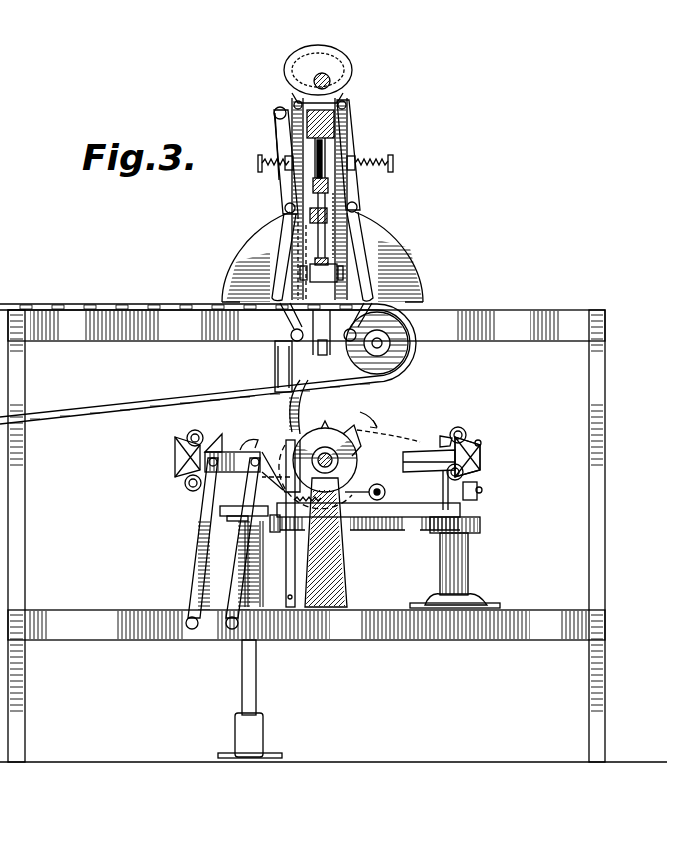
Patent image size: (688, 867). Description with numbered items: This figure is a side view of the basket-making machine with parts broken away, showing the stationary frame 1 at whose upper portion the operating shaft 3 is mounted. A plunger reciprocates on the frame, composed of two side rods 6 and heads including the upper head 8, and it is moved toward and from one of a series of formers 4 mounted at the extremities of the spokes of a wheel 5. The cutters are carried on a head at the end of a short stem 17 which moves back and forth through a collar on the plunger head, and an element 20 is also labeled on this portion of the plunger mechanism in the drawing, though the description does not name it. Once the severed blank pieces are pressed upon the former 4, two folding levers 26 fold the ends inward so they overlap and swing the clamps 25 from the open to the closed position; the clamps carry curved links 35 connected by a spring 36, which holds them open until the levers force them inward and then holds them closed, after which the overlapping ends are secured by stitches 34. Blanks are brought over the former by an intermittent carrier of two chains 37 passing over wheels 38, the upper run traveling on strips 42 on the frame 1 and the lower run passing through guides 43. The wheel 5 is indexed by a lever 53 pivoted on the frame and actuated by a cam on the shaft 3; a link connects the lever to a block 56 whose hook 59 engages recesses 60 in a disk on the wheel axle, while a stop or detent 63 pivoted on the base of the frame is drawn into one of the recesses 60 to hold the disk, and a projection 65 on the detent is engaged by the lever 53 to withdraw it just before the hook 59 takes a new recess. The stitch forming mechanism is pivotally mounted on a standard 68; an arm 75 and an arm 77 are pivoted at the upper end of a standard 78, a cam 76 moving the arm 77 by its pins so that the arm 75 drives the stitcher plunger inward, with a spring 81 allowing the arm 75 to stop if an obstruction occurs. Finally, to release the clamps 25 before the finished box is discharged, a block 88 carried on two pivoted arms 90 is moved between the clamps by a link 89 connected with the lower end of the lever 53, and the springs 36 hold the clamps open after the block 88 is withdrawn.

The frame 1 is at (516, 298).
The operating shaft 3 is at (332, 72).
The former 4 is at (174, 461).
The wheel 5 is at (425, 452).
The side rods 6 is at (332, 160).
The upper head of the plunger 8 is at (336, 128).
The stem 17 is at (318, 240).
The lever arm 20 is at (336, 232).
The clamps 25 is at (286, 336).
The folding levers 26 is at (408, 243).
The stitches 34 is at (482, 462).
The curved links 35 is at (468, 430).
The spring 36 is at (449, 438).
The chains 37 is at (108, 308).
The wheels 38 is at (414, 352).
The strips 42 is at (229, 318).
The guides 43 is at (156, 402).
The lever 53 is at (280, 131).
The block 56 is at (350, 427).
The hook 59 is at (377, 470).
The recesses 60 is at (328, 431).
The stop or detent 63 is at (290, 582).
The arm or projection 65 is at (232, 444).
The standard 68 is at (470, 556).
The arm 75 is at (440, 505).
The cam 76 is at (370, 534).
The arm 77 is at (288, 553).
The standard 78 is at (239, 501).
The spring 81 is at (385, 492).
The block 88 is at (217, 443).
The link 89 is at (265, 447).
The pivoted arms 90 is at (203, 550).